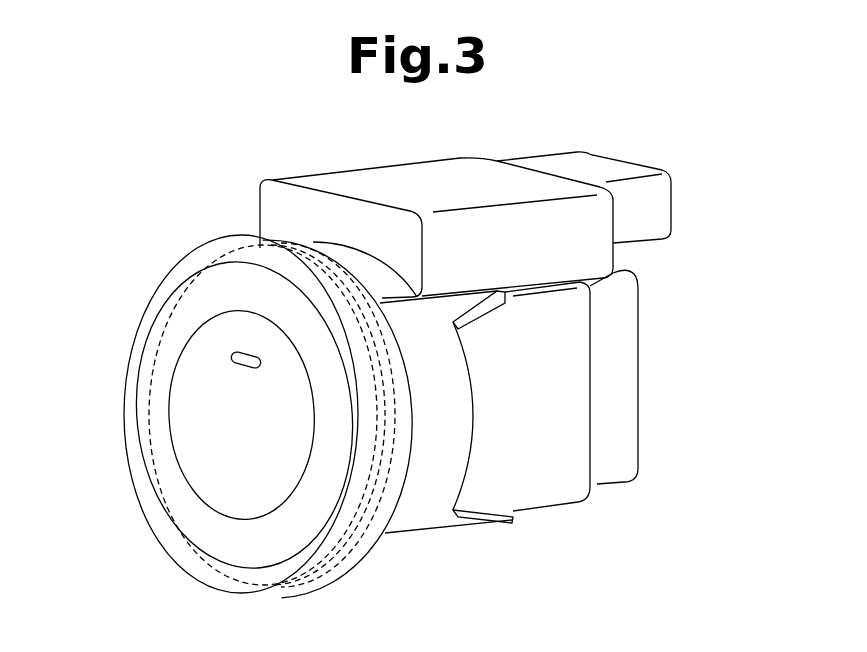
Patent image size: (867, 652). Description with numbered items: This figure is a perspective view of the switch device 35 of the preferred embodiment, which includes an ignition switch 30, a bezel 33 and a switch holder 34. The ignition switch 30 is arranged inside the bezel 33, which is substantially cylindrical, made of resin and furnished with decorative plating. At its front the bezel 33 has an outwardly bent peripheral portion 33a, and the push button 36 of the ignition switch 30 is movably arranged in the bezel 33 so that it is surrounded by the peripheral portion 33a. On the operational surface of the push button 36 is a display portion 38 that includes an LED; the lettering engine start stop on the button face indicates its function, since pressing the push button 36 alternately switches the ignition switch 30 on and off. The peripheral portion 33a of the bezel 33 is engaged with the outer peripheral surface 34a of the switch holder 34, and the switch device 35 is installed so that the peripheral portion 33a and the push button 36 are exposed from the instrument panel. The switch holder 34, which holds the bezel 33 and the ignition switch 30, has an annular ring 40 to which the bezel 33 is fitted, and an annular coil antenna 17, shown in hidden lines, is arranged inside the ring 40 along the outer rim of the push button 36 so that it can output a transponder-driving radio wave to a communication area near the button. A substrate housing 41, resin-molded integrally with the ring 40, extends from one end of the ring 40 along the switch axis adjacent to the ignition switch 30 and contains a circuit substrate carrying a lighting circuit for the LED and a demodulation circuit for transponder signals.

The coil antenna 17 is at (358, 565).
The ignition switch 30 is at (638, 367).
The bezel 33 is at (447, 522).
The peripheral portion 33a is at (148, 353).
The switch holder 34 is at (335, 339).
The outer peripheral surface 34a is at (128, 402).
The switch device 35 is at (646, 156).
The push button 36 is at (241, 506).
The display portion 38 is at (232, 358).
The ring 40 is at (237, 365).
The substrate housing 41 is at (428, 215).